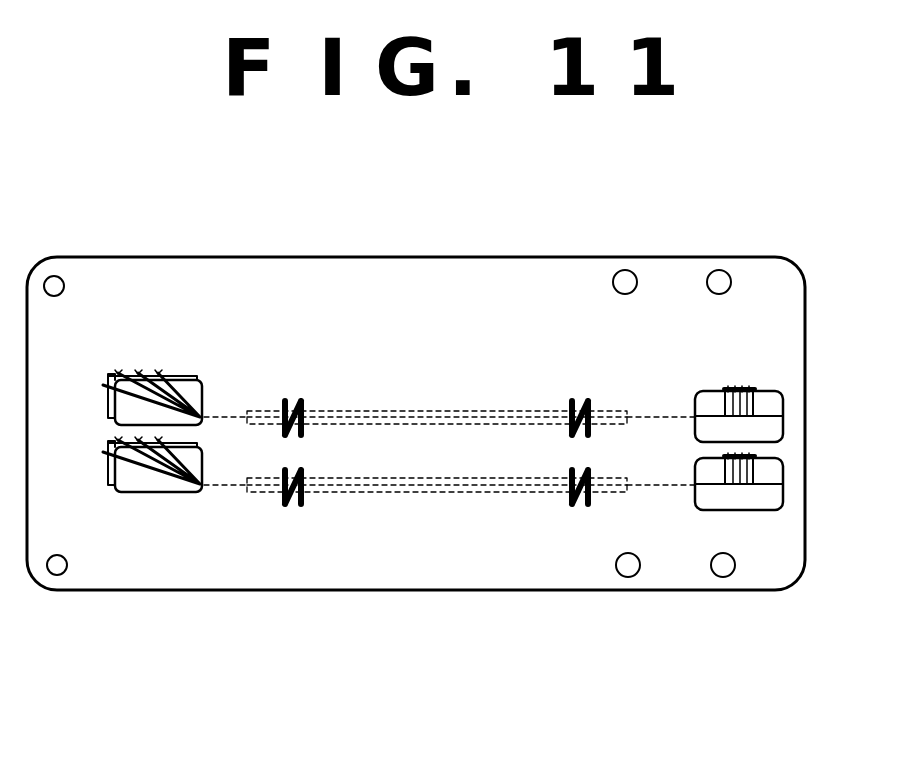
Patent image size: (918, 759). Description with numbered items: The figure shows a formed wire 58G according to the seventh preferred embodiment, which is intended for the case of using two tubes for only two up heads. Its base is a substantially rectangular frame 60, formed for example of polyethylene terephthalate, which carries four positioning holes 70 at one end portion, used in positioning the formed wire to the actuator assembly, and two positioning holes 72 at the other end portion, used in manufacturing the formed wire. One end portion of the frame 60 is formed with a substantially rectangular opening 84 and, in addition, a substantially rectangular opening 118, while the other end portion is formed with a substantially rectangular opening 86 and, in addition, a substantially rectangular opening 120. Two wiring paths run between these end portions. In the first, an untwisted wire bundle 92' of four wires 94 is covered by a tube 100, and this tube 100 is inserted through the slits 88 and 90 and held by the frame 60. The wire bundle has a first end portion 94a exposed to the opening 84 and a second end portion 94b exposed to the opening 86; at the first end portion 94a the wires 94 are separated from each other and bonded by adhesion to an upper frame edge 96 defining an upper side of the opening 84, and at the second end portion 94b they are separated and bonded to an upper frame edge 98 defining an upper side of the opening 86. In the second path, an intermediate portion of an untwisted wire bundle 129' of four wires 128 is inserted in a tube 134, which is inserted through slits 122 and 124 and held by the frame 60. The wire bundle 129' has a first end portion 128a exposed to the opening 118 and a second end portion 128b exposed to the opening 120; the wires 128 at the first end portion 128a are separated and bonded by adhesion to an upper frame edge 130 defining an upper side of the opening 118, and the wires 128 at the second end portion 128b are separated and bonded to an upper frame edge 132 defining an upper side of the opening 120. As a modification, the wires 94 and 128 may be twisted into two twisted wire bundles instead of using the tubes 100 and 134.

The formed wire 58G is at (450, 234).
The frame 60 is at (418, 591).
The positioning holes 70 is at (624, 270).
The positioning holes 72 is at (54, 276).
The opening 84 is at (765, 500).
The opening 86 is at (180, 488).
The slit 88 is at (580, 504).
The slit 90 is at (292, 504).
The untwisted wire bundle 92' is at (471, 516).
The wires 94 is at (712, 487).
The first end portion 94a is at (757, 474).
The second end portion 94b is at (128, 460).
The upper frame edge 96 is at (757, 452).
The upper frame edge 98 is at (110, 465).
The tube 100 is at (393, 492).
The opening 118 is at (775, 430).
The opening 120 is at (120, 413).
The slit 122 is at (580, 398).
The slit 124 is at (293, 398).
The wires 128 is at (712, 415).
The first end portion 128a is at (753, 403).
The second end portion 128b is at (180, 392).
The untwisted wire bundle 129' is at (471, 386).
The upper frame edge 130 is at (738, 388).
The upper frame edge 132 is at (112, 378).
The tube 134 is at (387, 410).